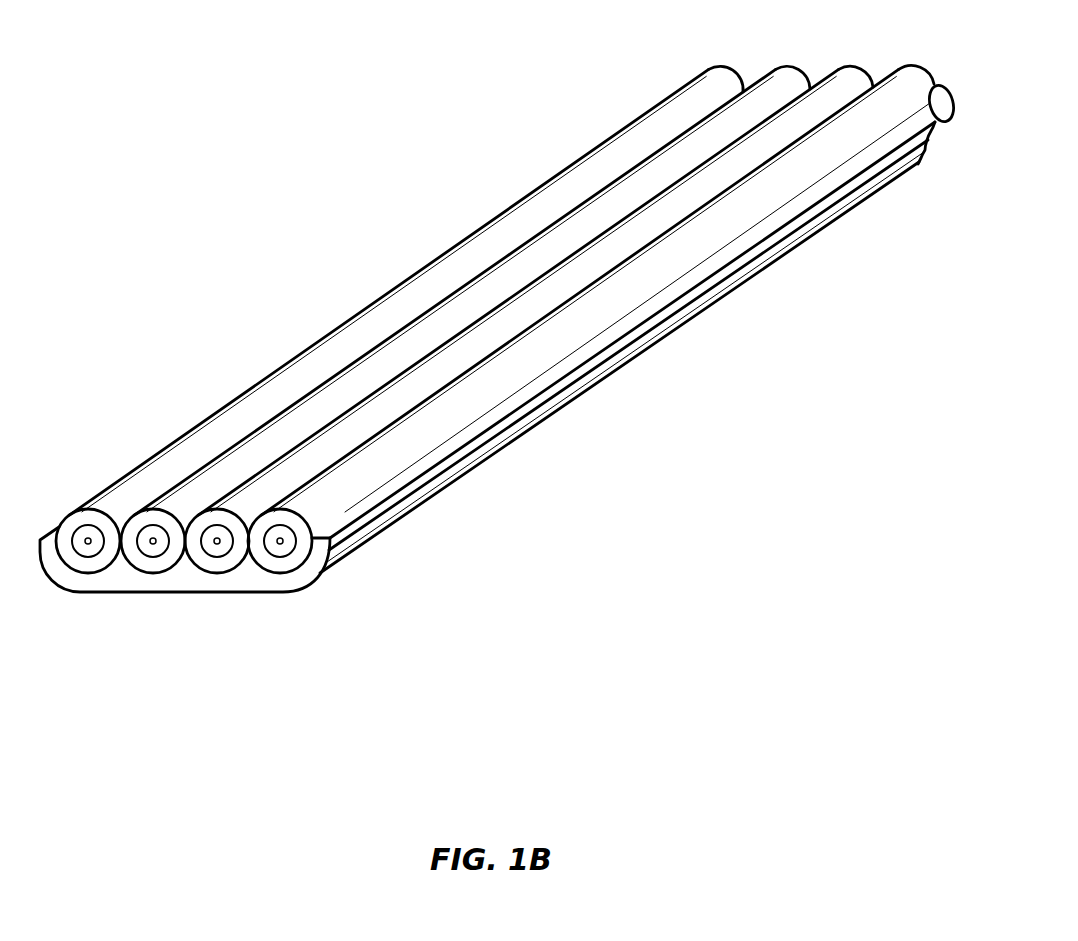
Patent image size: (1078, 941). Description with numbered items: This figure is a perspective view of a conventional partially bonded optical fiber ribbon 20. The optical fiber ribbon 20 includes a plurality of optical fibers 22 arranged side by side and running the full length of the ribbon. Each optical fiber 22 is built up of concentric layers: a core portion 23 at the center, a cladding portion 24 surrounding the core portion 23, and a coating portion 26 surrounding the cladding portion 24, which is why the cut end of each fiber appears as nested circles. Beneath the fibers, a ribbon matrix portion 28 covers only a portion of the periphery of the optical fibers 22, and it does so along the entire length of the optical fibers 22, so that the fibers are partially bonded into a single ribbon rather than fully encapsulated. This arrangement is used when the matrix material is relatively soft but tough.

The optical fiber ribbon 20 is at (364, 189).
The optical fiber 22 is at (725, 63).
The core portion 23 is at (87, 545).
The cladding portion 24 is at (74, 549).
The coating portion 26 is at (93, 572).
The ribbon matrix portion 28 is at (610, 378).